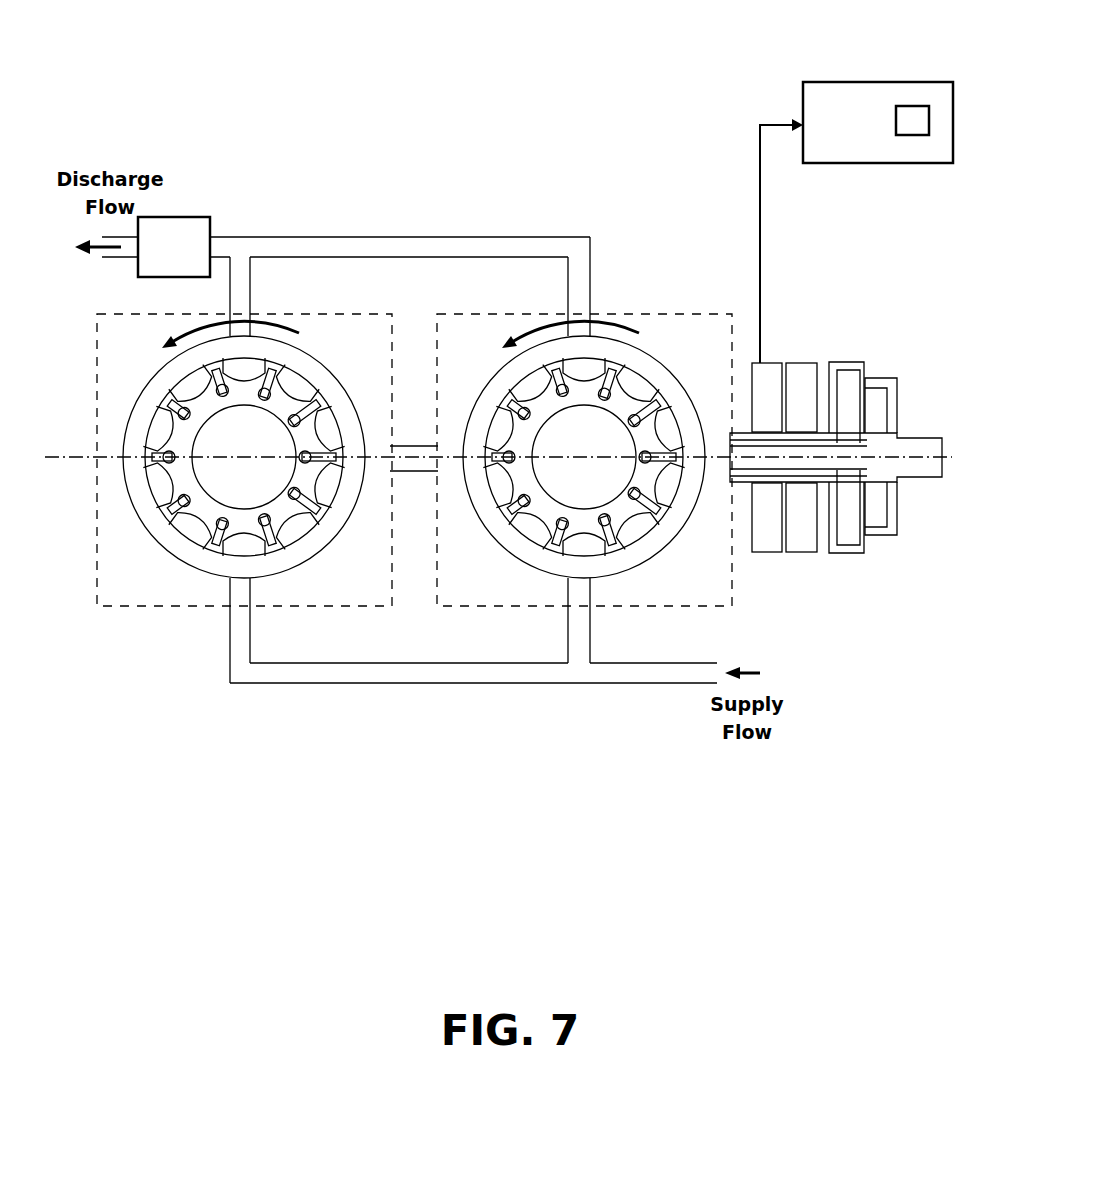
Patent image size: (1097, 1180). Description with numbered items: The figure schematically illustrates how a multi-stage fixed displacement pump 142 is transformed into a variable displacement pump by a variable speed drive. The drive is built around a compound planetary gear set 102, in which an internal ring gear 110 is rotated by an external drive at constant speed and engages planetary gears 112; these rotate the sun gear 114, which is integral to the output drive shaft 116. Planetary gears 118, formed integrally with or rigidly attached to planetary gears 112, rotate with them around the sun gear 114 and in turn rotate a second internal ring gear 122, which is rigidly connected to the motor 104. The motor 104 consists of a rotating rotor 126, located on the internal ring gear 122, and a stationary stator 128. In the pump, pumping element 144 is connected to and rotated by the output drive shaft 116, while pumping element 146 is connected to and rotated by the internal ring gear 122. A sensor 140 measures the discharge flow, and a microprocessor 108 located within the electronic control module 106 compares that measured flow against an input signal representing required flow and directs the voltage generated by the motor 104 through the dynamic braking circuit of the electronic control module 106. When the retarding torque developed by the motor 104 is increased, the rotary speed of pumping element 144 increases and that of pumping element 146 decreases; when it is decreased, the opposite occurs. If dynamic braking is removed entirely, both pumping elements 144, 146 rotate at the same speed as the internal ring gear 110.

The compound planetary gear set 102 is at (876, 606).
The motor 104 is at (778, 325).
The electronic control module 106 is at (800, 95).
The microprocessor 108 is at (915, 104).
The internal ring gear 110 is at (917, 475).
The planetary gears 112 is at (877, 375).
The sun gear 114 is at (875, 490).
The output drive shaft 116 is at (413, 440).
The planetary gears 118 is at (847, 362).
The internal ring gear 122 is at (838, 555).
The rotor 126 is at (802, 362).
The stator 128 is at (760, 553).
The sensor 140 is at (177, 217).
The multi-stage fixed displacement pump 142 is at (340, 762).
The pumping element 144 is at (190, 522).
The pumping element 146 is at (527, 520).